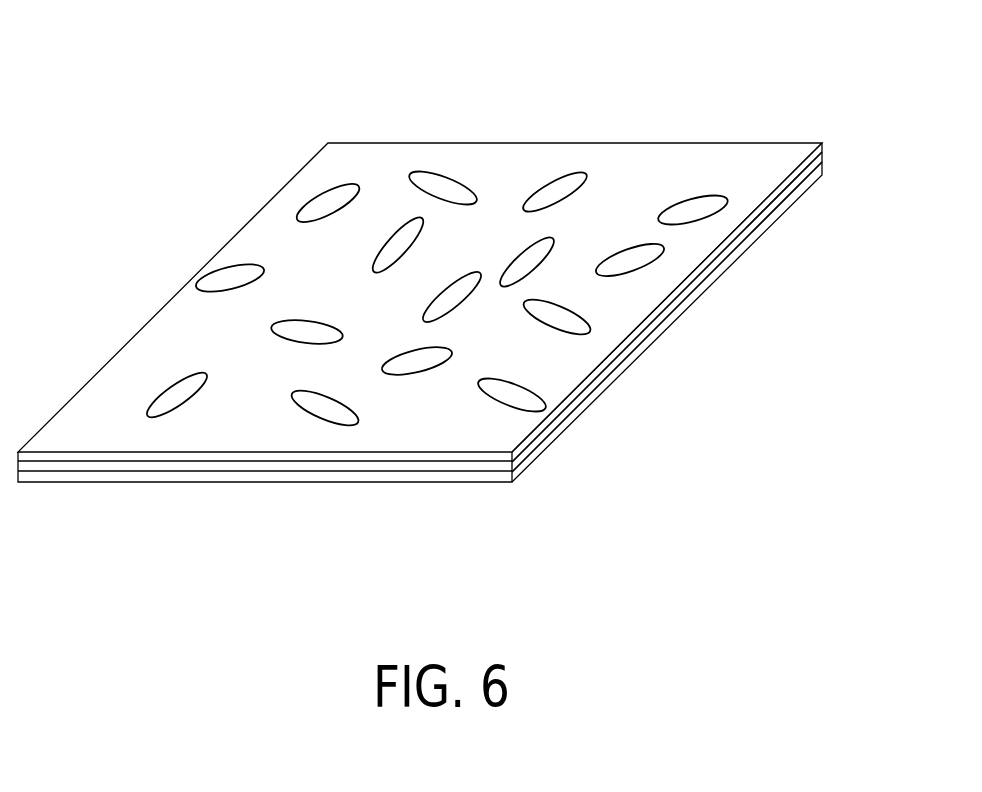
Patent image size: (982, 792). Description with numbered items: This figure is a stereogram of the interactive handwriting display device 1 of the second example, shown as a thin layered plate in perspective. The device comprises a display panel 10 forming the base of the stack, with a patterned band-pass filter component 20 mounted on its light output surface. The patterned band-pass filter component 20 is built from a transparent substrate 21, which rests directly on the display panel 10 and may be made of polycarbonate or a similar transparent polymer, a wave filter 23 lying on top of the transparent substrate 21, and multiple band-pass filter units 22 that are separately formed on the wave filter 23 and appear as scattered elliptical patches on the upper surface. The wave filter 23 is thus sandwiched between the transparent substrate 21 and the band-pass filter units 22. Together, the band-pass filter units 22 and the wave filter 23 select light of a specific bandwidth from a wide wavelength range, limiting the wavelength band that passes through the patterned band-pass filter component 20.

The interactive handwriting display device 1 is at (455, 280).
The display panel 10 is at (447, 475).
The patterned band-pass filter component 20 is at (517, 307).
The transparent substrate 21 is at (673, 298).
The band-pass filter units 22 is at (706, 208).
The wave filter 23 is at (703, 265).